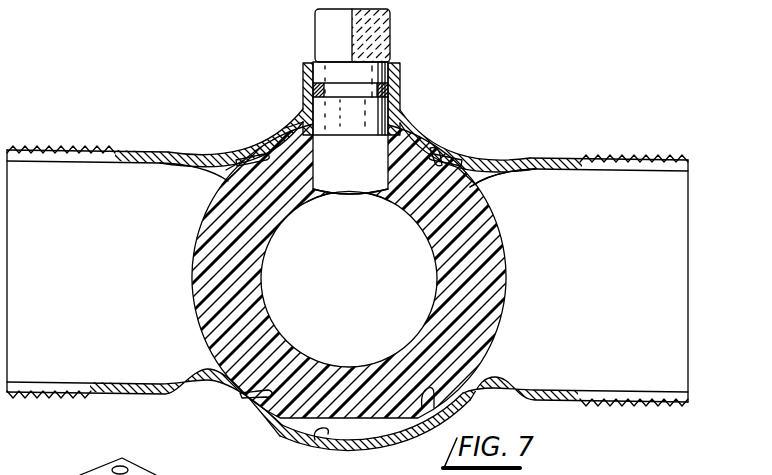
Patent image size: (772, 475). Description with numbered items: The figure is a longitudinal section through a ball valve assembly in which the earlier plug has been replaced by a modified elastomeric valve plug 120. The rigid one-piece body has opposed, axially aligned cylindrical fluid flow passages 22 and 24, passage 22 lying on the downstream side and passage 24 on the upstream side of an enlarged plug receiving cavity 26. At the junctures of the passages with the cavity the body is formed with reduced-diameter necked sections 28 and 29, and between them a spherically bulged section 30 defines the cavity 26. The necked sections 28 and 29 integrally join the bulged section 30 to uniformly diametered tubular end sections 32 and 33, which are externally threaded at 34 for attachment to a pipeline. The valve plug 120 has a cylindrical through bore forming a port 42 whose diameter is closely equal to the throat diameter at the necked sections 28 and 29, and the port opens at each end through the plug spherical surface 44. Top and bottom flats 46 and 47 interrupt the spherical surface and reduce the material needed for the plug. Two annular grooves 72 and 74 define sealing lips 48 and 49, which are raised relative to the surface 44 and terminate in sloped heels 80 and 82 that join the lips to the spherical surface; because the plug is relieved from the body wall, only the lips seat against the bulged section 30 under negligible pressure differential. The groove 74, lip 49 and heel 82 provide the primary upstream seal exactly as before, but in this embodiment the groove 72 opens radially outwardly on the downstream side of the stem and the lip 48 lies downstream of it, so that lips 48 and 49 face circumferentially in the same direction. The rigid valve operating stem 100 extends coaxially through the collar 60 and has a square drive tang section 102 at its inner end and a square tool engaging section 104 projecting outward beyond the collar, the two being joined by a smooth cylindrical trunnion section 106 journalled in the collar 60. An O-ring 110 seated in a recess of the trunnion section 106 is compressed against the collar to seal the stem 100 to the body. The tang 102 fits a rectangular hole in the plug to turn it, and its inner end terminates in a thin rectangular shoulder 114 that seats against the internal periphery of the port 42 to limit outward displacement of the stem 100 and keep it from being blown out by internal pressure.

The fluid flow passage 22 is at (620, 390).
The fluid flow passage 24 is at (82, 382).
The plug receiving cavity 26 is at (318, 432).
The necked section 28 is at (500, 160).
The necked section 29 is at (218, 151).
The spherically bulged section 30 is at (255, 132).
The tubular end section 32 is at (578, 158).
The tubular end section 33 is at (160, 151).
The external threads 34 is at (80, 150).
The port 42 is at (270, 320).
The plug spherical surface 44 is at (496, 220).
The top flat 46 is at (405, 124).
The bottom flat 47 is at (367, 424).
The sealing lip 48 is at (448, 162).
The sealing lip 49 is at (235, 157).
The collar 60 is at (303, 70).
The annular groove 72 is at (432, 150).
The annular groove 74 is at (246, 176).
The sloped heel 80 is at (463, 165).
The sloped heel 82 is at (296, 136).
The valve operating stem 100 is at (405, 44).
The drive tang section 102 is at (368, 195).
The tool engaging section 104 is at (320, 24).
The trunnion section 106 is at (358, 132).
The O-ring 110 is at (393, 93).
The shoulder 114 is at (325, 199).
The valve plug 120 is at (519, 287).